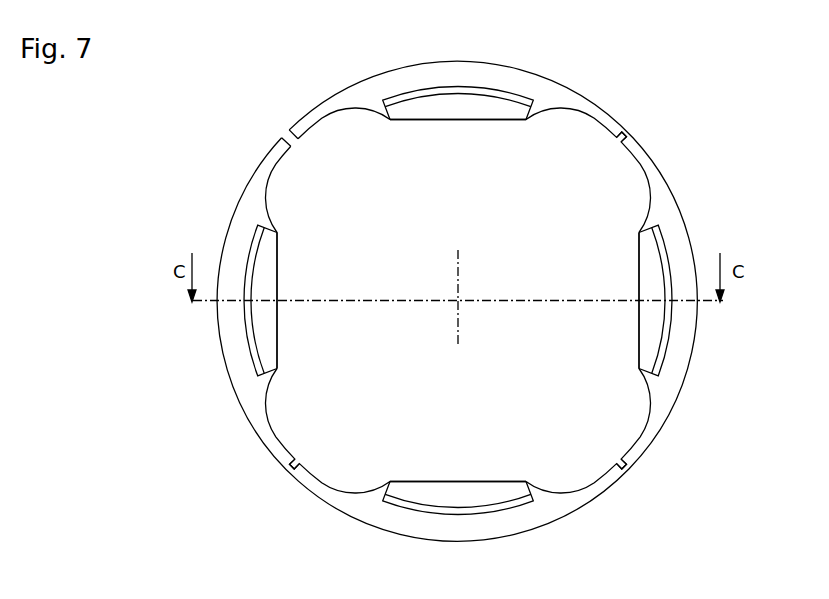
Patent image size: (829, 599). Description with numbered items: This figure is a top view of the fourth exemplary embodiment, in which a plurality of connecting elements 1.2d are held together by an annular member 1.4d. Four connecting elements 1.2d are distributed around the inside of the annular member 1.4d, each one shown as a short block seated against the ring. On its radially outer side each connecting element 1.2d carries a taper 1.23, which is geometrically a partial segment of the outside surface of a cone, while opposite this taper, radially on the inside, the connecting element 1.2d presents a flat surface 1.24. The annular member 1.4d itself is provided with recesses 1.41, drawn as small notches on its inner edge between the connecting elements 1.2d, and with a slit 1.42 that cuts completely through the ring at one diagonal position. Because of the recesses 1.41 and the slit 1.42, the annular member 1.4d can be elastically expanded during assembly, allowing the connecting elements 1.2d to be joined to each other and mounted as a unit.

The annular member 1.4d is at (340, 507).
The connecting element 1.2d is at (413, 110).
The taper 1.23 is at (522, 99).
The flat surface 1.24 is at (465, 121).
The recess 1.41 is at (617, 140).
The slit 1.42 is at (299, 148).